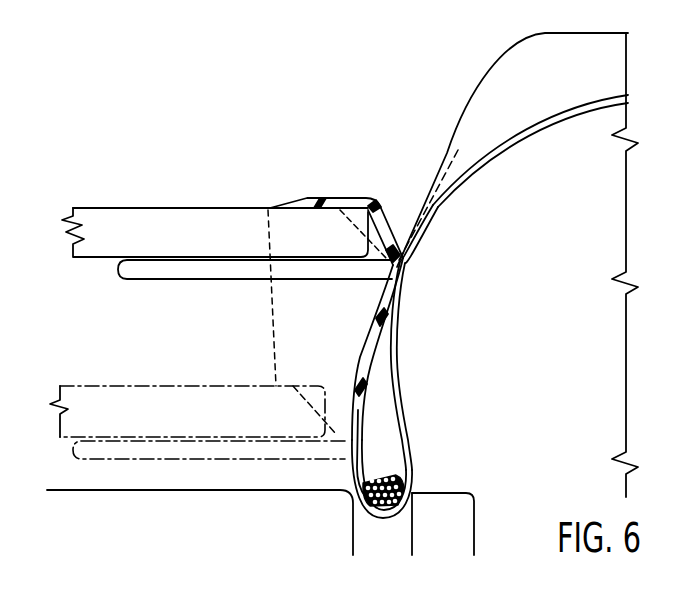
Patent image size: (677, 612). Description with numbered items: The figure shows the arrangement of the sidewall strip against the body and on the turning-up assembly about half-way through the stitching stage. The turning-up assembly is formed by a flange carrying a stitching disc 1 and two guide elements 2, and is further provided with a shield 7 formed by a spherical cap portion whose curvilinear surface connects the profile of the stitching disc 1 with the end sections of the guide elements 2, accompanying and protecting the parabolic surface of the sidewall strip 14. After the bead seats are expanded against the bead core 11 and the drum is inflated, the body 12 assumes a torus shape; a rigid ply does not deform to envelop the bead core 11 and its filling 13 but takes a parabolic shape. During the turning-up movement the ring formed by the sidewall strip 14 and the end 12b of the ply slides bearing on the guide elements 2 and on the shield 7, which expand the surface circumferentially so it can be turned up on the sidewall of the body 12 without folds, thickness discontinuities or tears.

The stitching disc 1 is at (218, 272).
The guide elements 2 is at (193, 221).
The shield 7 is at (383, 250).
The bead core 11 is at (398, 488).
The body 12 is at (437, 203).
The end of the ply 12b is at (360, 418).
The filling 13 is at (392, 353).
The sidewall strip 14 is at (360, 205).